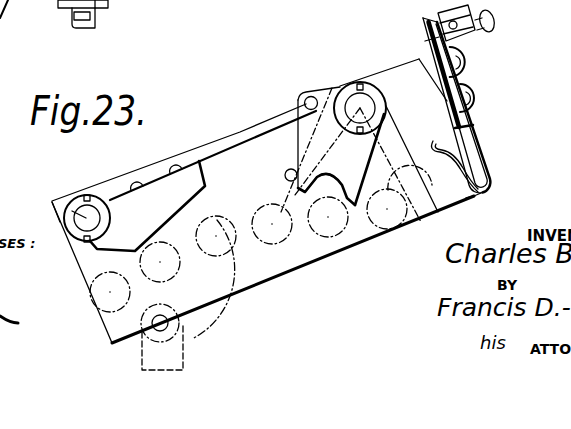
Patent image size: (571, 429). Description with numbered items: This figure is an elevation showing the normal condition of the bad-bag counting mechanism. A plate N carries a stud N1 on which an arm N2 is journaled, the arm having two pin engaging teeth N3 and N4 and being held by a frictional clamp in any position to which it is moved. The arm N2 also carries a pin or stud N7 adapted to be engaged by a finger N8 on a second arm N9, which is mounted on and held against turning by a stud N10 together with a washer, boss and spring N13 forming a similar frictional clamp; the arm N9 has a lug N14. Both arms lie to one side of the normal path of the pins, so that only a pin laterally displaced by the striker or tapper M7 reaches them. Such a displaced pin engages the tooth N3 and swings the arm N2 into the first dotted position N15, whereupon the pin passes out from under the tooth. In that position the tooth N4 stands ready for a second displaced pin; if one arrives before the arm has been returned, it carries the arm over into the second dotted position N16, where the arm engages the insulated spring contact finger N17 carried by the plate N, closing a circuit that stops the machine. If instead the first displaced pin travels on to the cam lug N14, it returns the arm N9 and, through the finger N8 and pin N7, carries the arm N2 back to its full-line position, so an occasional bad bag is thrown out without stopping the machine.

The plate N is at (356, 140).
The stud N1 is at (362, 106).
The arm N2 is at (323, 97).
The pin engaging tooth N3 is at (327, 181).
The pin engaging tooth N4 is at (302, 167).
The pin or stud N7 is at (303, 92).
The finger N8 is at (212, 153).
The arm N9 is at (118, 208).
The stud N10 is at (43, 211).
The spring N13 is at (120, 0).
The lug N14 is at (127, 250).
The dotted position of arm N15 is at (438, 212).
The second dotted position of arm N16 is at (483, 195).
The insulated spring contact finger N17 is at (488, 162).
The striker or tapper M7 is at (213, 318).